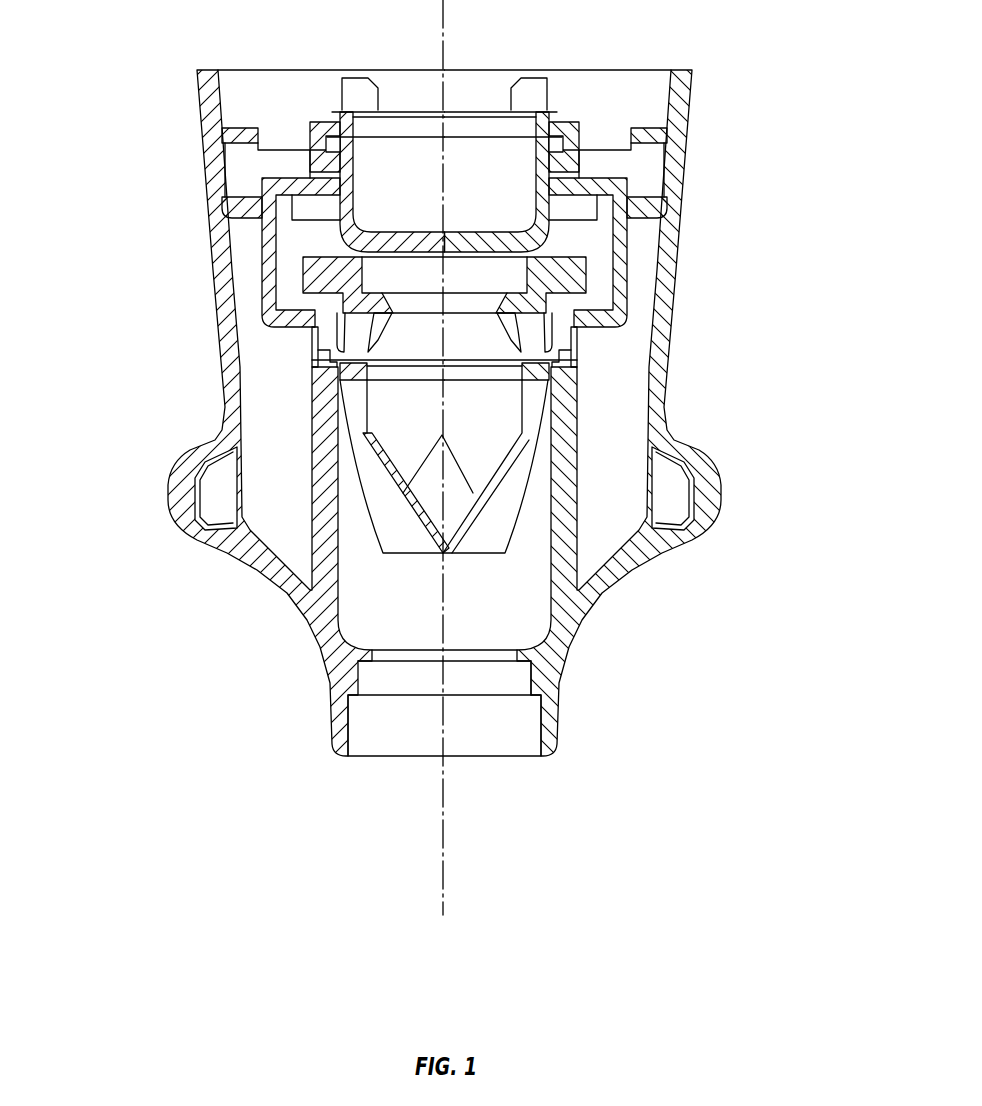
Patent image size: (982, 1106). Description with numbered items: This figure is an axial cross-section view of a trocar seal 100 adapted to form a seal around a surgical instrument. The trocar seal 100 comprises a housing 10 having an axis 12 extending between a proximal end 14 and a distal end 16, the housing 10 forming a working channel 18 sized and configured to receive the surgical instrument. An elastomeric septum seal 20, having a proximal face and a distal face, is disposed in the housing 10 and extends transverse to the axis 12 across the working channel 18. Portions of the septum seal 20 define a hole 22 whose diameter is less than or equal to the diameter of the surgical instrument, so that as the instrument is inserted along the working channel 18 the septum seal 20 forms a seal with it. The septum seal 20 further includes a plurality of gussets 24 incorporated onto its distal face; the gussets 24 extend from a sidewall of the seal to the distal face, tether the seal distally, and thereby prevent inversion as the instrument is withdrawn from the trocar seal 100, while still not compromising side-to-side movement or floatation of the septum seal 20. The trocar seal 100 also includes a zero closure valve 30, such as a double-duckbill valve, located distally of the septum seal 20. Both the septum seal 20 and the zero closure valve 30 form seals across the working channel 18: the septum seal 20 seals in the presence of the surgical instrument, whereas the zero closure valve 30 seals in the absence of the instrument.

The trocar seal 100 is at (435, 457).
The housing 10 is at (317, 643).
The axis 12 is at (446, 877).
The proximal end 14 is at (183, 90).
The distal end 16 is at (303, 722).
The working channel 18 is at (490, 607).
The septum seal 20 is at (320, 268).
The hole 22 is at (470, 307).
The gussets 24 is at (500, 338).
The zero closure valve 30 is at (516, 536).